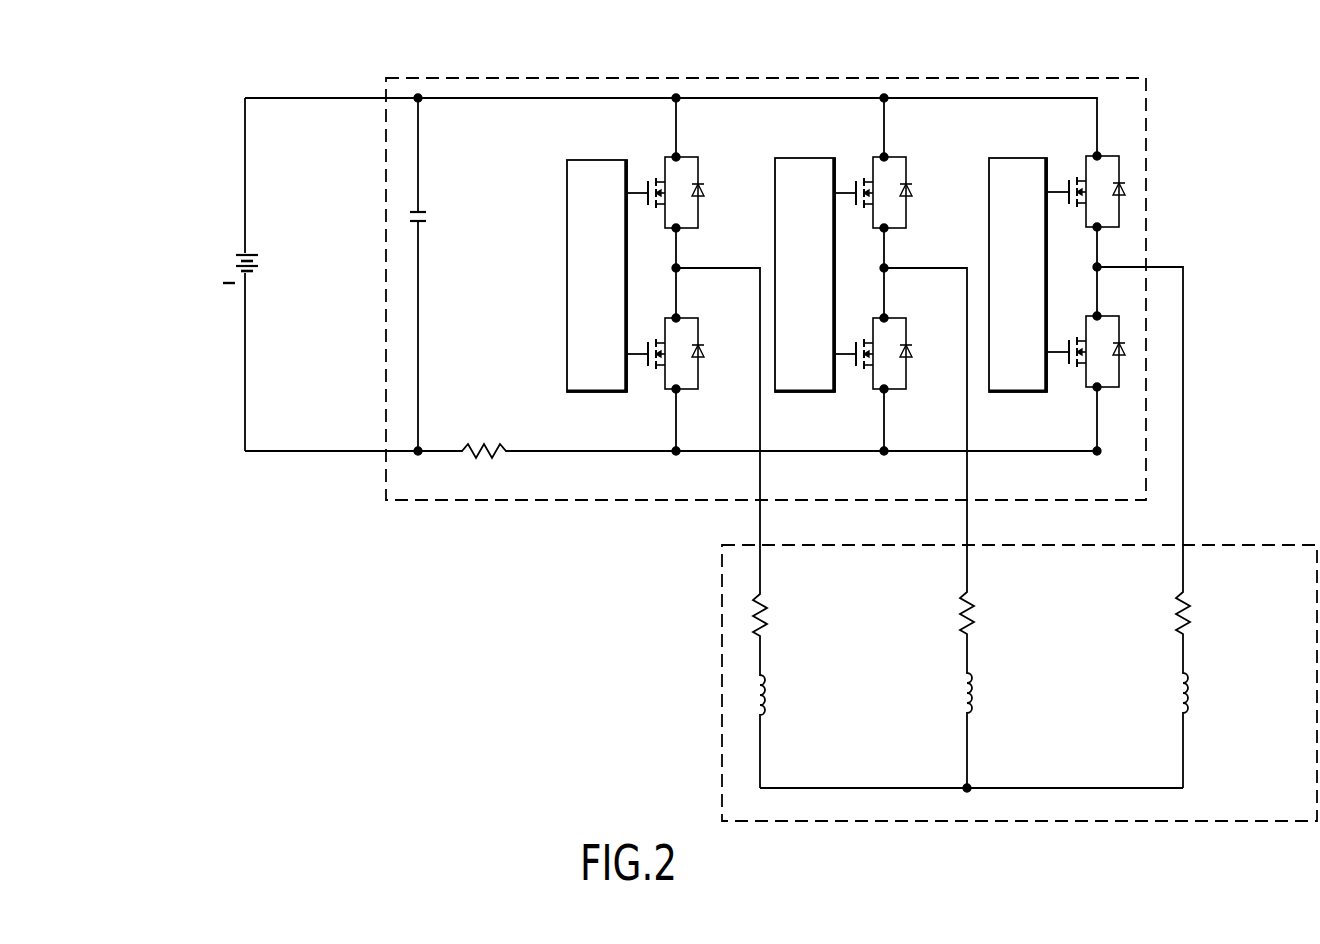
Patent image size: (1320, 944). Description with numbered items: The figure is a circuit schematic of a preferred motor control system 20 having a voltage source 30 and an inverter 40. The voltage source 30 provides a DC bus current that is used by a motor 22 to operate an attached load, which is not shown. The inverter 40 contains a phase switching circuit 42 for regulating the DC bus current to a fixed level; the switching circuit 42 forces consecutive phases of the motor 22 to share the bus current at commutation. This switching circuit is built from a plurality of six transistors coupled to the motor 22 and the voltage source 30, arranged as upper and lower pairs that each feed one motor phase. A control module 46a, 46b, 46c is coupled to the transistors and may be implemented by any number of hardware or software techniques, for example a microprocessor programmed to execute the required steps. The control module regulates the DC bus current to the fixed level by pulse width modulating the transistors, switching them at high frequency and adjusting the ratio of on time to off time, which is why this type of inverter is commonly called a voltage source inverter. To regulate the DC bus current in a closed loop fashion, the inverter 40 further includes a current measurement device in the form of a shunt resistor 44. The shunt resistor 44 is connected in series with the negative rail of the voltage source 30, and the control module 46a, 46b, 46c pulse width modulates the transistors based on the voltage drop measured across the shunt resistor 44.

The motor control system 20 is at (718, 52).
The motor 22 is at (698, 661).
The voltage source 30 is at (231, 267).
The inverter 40 is at (494, 502).
The phase switching circuit 42 is at (628, 434).
The shunt resistor 44 is at (478, 458).
The control module 46a is at (612, 268).
The control module 46b is at (823, 268).
The control module 46c is at (1034, 268).